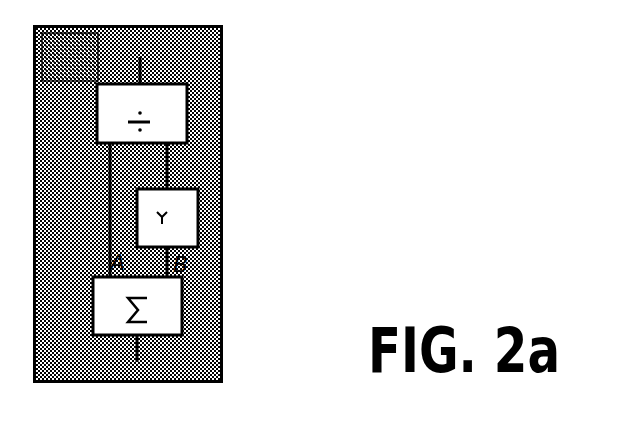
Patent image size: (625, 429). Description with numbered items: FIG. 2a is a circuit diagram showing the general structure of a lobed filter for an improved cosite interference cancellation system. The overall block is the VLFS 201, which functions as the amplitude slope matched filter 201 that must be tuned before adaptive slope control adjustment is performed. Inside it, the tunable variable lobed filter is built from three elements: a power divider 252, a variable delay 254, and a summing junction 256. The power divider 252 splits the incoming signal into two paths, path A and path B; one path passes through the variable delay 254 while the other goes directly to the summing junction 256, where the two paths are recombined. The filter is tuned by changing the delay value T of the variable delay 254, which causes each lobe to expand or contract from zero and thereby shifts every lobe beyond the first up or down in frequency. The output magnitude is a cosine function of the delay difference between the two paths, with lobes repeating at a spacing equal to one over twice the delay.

The variable lobed filter system (VLFS) 201 is at (127, 203).
The power divider 252 is at (142, 113).
The variable delay 254 is at (167, 218).
The summing junction 256 is at (137, 306).